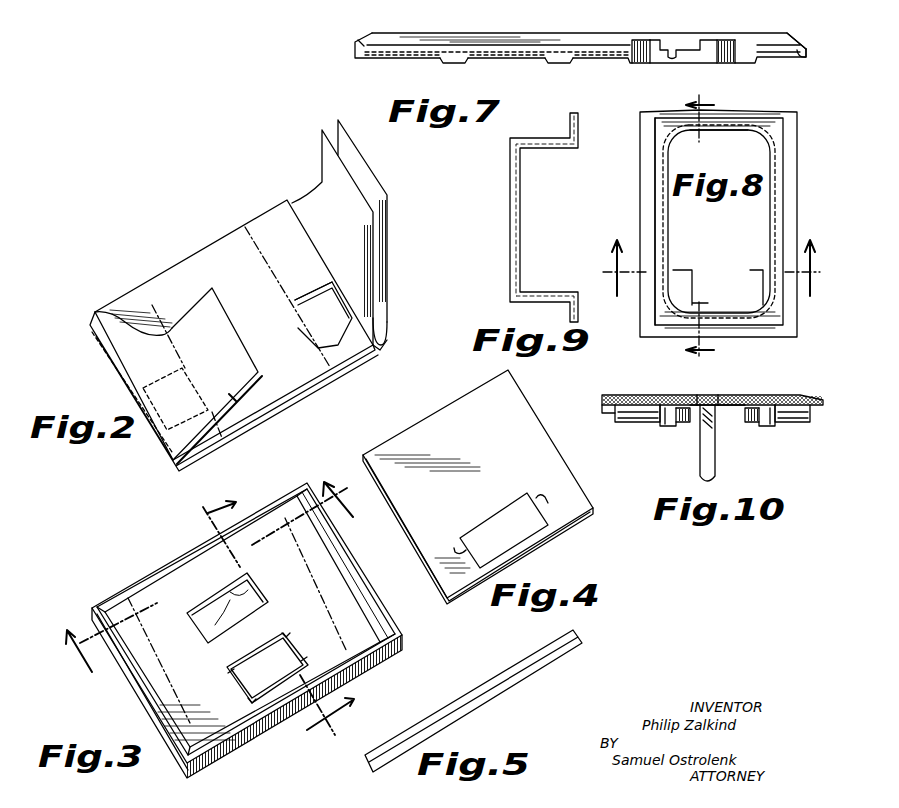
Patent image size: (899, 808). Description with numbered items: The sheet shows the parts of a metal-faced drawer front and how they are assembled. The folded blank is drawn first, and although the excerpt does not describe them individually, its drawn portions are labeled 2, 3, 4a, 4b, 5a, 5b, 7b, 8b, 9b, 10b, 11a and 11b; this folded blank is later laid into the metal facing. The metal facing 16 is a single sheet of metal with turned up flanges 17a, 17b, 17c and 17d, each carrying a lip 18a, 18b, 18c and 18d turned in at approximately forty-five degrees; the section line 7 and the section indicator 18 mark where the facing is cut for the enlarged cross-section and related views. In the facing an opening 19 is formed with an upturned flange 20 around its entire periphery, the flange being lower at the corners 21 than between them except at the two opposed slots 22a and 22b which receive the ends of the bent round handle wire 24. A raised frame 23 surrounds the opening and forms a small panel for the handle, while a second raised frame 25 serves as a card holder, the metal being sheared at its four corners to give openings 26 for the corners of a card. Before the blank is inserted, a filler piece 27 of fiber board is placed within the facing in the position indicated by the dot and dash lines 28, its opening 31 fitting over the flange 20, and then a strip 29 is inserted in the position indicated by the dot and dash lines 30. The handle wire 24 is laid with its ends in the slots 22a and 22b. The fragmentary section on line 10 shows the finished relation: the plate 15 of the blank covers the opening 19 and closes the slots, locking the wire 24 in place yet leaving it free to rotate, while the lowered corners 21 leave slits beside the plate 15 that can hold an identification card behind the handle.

In FIG. 10, the base sheet 2 is at (611, 395).
In FIG. 2, the base sheet 2 is at (308, 393).
In FIG. 10, the body panel 3 is at (630, 395).
In FIG. 2, the body panel 3 is at (228, 273).
In FIG. 2, the flap 4a is at (175, 374).
In FIG. 2, the rear panel 4b is at (377, 187).
In FIG. 2, the folded edge 5a is at (242, 392).
In FIG. 2, the side panel 5b is at (332, 237).
In FIG. 3, the section line 7— 7 is at (283, 614).
In FIG. 2, the pocket 7b is at (323, 315).
In FIG. 2, the fold line 8b is at (313, 245).
In FIG. 2, the loop 9b is at (388, 323).
In FIG. 8, the section line 10— 10 is at (708, 254).
In FIG. 2, the fold 10b is at (372, 348).
In FIG. 2, the tongue edge 11a is at (138, 300).
In FIG. 2, the slot 11b is at (288, 300).
In FIG. 10, the plate 15 is at (700, 395).
In FIG. 7, the metal facing 16 is at (410, 58).
In FIG. 10, the metal facing 16 is at (636, 424).
In FIG. 3, the metal facing 16 is at (247, 630).
In FIG. 3, the turned up flange 17a is at (123, 690).
In FIG. 3, the turned up flange 17b is at (353, 548).
In FIG. 7, the turned up flange 17c is at (355, 50).
In FIG. 3, the turned up flange 17c is at (152, 567).
In FIG. 7, the turned up flange 17d is at (806, 48).
In FIG. 3, the turned up flange 17d is at (358, 668).
In FIG. 3, the section line 18- 18 is at (199, 568).
In FIG. 3, the lip 18a is at (143, 658).
In FIG. 7, the lip 18b is at (487, 33).
In FIG. 3, the lip 18b is at (355, 592).
In FIG. 7, the lip 18c is at (361, 40).
In FIG. 3, the lip 18c is at (187, 540).
In FIG. 7, the lip 18d is at (796, 42).
In FIG. 3, the lip 18d is at (250, 723).
In FIG. 8, the handle opening 19 is at (704, 204).
In FIG. 3, the handle opening 19 is at (267, 668).
In FIG. 7, the upturned flange 20 is at (632, 40).
In FIG. 8, the upturned flange 20 is at (722, 136).
In FIG. 3, the upturned flange 20 is at (267, 640).
In FIG. 7, the corner slits 21 is at (640, 44).
In FIG. 8, the corner slits 21 is at (668, 140).
In FIG. 10, the corner slits 21 is at (680, 424).
In FIG. 3, the corner slits 21 is at (227, 670).
In FIG. 8, the slot 22a is at (710, 318).
In FIG. 3, the slot 22a is at (232, 681).
In FIG. 7, the slot 22b is at (672, 48).
In FIG. 8, the slot 22b is at (706, 128).
In FIG. 10, the slot 22b is at (728, 395).
In FIG. 3, the slot 22b is at (293, 642).
In FIG. 7, the raised frame 23 is at (632, 62).
In FIG. 8, the raised frame 23 is at (655, 166).
In FIG. 10, the raised frame 23 is at (667, 427).
In FIG. 9, the handle wire 24 is at (520, 262).
In FIG. 10, the handle wire 24 is at (716, 461).
In FIG. 7, the card holder frame 25 is at (455, 63).
In FIG. 8, the card holder frame 25 is at (680, 228).
In FIG. 7, the openings 26 is at (480, 60).
In FIG. 3, the openings 26 is at (195, 613).
In FIG. 10, the filler piece 27 is at (606, 416).
In FIG. 4, the filler piece 27 is at (478, 487).
In FIG. 3, the dot and dash lines 28 is at (287, 548).
In FIG. 5, the strip 29 is at (470, 707).
In FIG. 3, the dot and dash lines 30 is at (365, 627).
In FIG. 4, the opening 31 is at (501, 530).